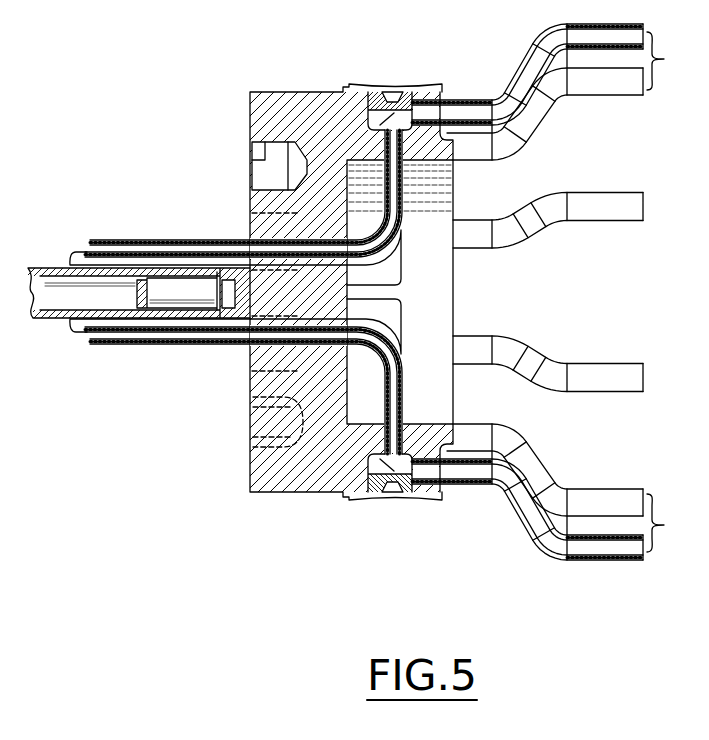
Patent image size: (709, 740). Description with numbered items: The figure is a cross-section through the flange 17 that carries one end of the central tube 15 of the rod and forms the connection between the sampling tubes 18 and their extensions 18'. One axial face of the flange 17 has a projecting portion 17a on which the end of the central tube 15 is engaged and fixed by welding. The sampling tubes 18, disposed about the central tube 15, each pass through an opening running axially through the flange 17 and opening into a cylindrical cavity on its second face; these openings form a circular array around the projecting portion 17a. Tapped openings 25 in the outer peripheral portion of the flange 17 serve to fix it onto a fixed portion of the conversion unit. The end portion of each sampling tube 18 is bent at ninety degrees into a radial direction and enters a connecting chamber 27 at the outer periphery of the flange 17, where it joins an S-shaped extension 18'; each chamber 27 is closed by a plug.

The central tube 15 is at (44, 266).
The flange 17 is at (305, 92).
The projecting portion 17a is at (160, 280).
The sampling tubes 18 is at (356, 292).
The extensions 18' is at (573, 292).
The tapped openings 25 is at (252, 159).
The connecting chamber 27 is at (395, 84).